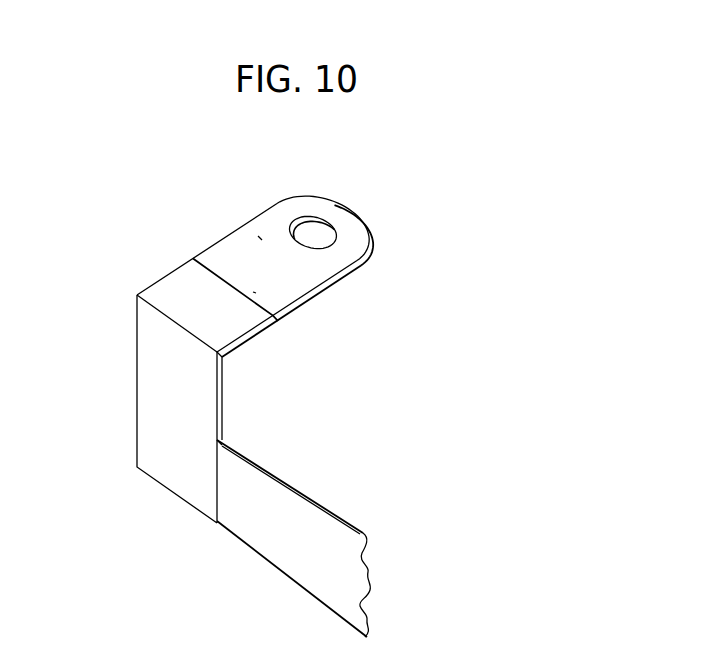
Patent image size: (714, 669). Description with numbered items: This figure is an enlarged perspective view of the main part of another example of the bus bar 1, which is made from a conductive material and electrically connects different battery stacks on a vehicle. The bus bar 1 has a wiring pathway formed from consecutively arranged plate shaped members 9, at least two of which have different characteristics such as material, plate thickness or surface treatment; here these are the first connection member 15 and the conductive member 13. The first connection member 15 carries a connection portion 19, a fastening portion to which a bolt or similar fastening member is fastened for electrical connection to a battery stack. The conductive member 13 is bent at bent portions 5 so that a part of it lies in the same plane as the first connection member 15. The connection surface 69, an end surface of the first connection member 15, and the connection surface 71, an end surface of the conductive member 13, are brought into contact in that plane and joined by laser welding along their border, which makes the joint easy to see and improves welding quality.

The bus bar 1 is at (375, 177).
The bent portion 5 is at (225, 358).
The plate shaped member 9 is at (260, 238).
The conductive member 13 is at (170, 400).
The first connection member 15 is at (305, 266).
The connection portion 19 is at (310, 227).
The connection surface 69 is at (228, 284).
The connection surface 71 is at (253, 292).